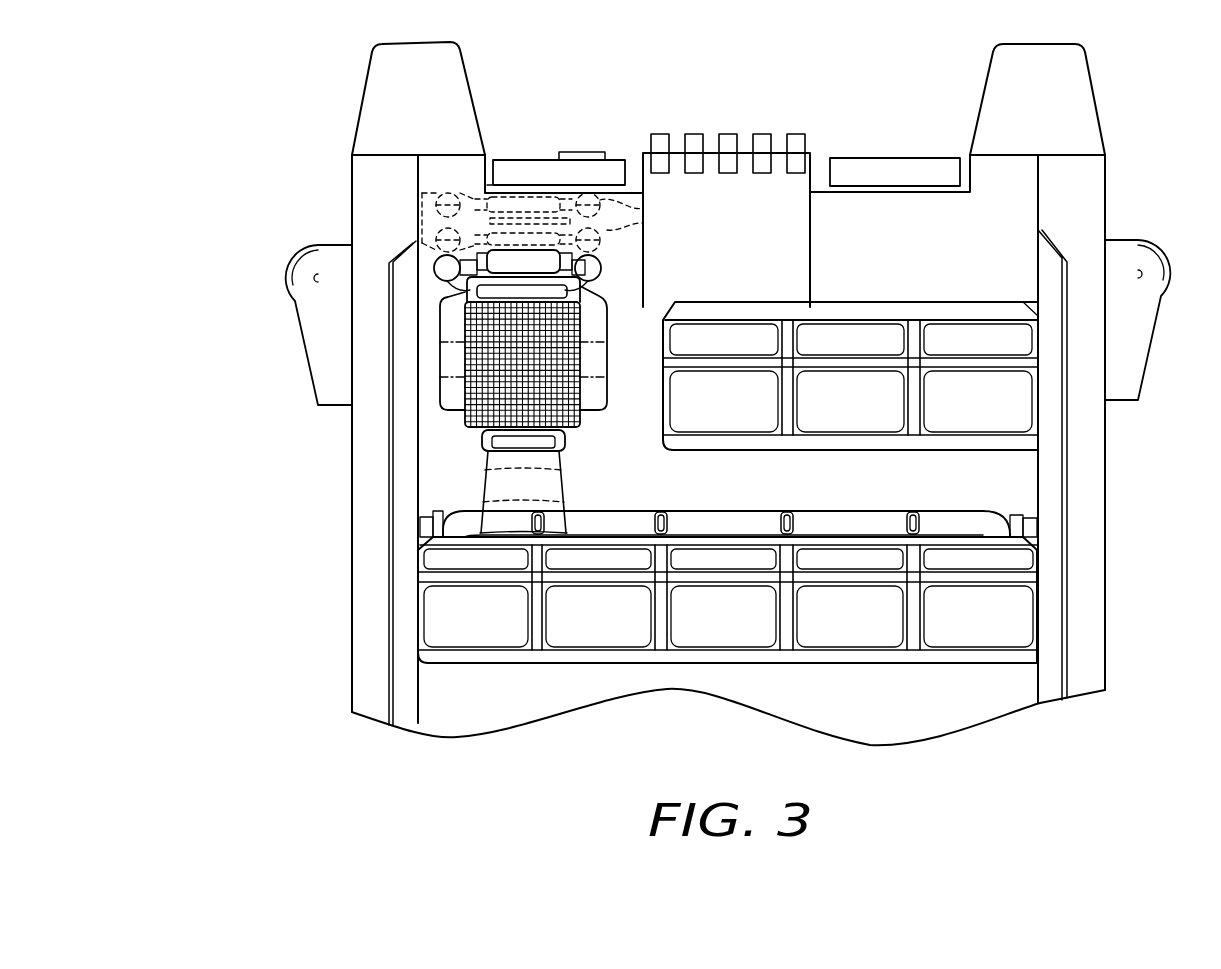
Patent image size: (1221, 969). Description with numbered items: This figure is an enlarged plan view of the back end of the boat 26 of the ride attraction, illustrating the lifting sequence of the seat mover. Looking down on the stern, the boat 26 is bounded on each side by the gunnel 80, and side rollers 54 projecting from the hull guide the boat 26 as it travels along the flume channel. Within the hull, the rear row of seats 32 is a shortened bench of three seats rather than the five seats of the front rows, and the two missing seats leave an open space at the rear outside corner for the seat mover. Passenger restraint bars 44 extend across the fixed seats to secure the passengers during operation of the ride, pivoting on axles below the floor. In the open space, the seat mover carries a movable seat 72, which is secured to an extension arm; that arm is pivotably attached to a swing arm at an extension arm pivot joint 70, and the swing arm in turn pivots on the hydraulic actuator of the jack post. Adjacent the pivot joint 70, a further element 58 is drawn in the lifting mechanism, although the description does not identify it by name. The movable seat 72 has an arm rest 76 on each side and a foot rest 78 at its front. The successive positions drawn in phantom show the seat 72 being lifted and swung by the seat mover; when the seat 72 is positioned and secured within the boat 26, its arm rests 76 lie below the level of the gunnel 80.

The boat 26 is at (322, 619).
The rear row of seats 32 is at (860, 413).
The passenger restraint bars 44 is at (883, 508).
The side rollers 54 is at (300, 278).
The hook roller 58 is at (418, 197).
The extension arm pivot joint 70 is at (643, 208).
The movable seat 72 is at (582, 344).
The arm rest 76 is at (597, 312).
The foot rest 78 is at (517, 485).
The gunnel 80 is at (389, 488).